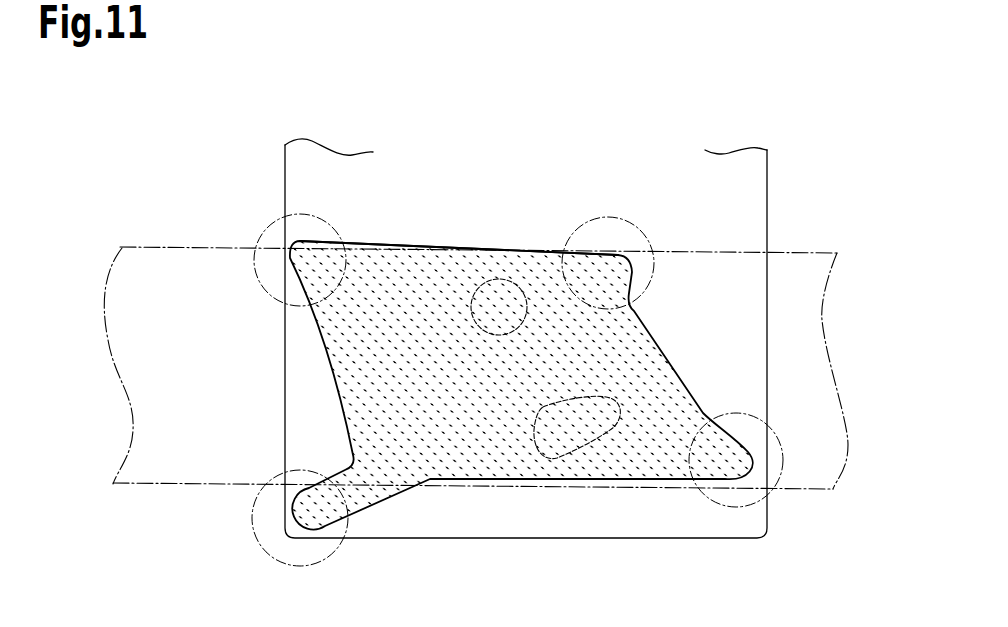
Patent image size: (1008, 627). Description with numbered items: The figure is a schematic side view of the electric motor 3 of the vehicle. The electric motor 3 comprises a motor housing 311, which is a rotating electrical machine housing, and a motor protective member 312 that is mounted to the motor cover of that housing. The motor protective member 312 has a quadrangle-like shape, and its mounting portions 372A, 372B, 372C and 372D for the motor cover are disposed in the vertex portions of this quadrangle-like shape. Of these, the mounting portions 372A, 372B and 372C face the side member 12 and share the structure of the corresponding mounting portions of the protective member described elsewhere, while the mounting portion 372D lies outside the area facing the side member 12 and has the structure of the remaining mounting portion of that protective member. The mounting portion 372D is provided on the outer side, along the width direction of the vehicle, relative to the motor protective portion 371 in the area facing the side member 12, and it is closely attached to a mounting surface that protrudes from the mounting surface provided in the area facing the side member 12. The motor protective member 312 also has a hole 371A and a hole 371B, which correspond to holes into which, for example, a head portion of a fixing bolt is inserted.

The electric motor 3 is at (516, 342).
The motor housing 311 is at (417, 213).
The motor protective member 312 is at (585, 252).
The motor protective portion 371 is at (470, 480).
The hole 371A is at (481, 284).
The hole 371B is at (585, 453).
The mounting portion 372A is at (640, 218).
The mounting portion 372B is at (255, 237).
The mounting portion 372C is at (783, 458).
The mounting portion 372D is at (255, 537).
The side member 12 is at (708, 248).